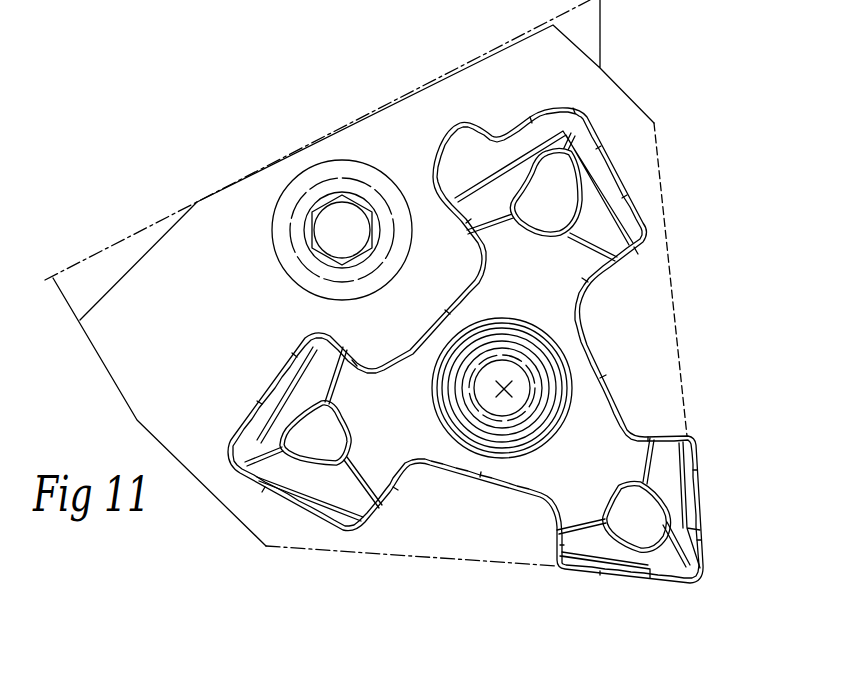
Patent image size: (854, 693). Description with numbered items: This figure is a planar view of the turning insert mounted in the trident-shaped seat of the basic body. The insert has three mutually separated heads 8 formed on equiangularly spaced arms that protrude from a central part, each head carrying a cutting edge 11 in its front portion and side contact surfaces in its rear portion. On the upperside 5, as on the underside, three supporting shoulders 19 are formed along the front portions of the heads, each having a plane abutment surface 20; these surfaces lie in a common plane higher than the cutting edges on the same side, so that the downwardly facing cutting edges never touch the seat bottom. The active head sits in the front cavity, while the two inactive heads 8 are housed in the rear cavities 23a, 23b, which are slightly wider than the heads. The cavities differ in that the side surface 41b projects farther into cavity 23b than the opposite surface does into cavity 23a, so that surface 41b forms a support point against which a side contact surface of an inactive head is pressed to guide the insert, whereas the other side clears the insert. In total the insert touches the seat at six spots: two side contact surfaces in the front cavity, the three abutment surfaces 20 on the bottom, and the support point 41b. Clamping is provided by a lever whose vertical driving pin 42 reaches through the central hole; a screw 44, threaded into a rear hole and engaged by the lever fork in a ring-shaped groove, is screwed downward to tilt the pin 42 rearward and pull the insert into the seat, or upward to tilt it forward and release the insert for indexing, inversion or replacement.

The upperside 5 is at (610, 477).
The head 8 is at (270, 384).
The cutting edge 11 is at (627, 583).
The supporting shoulder 19 is at (350, 440).
The abutment surface 20 is at (333, 450).
The rear cavity 23a is at (253, 420).
The rear cavity 23b is at (610, 184).
The side surface 41b is at (474, 205).
The driving pin 42 is at (506, 373).
The screw 44 is at (318, 235).